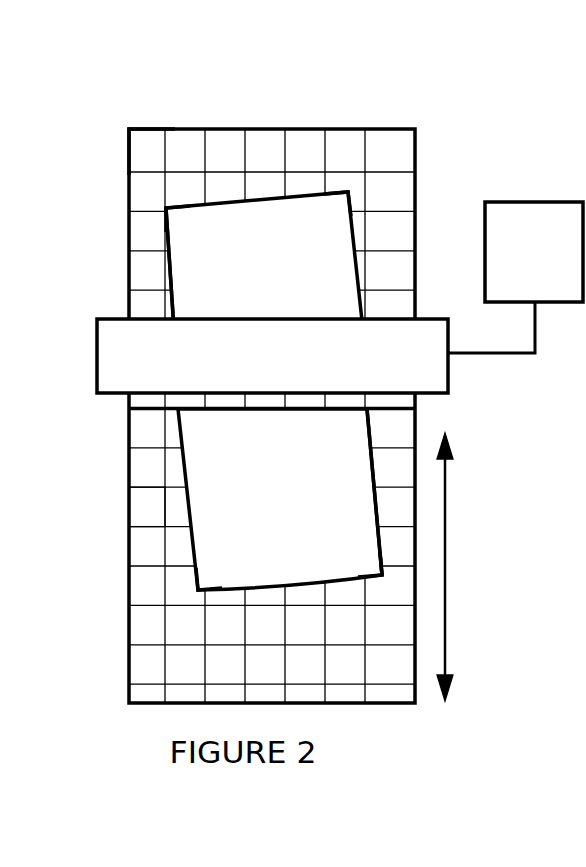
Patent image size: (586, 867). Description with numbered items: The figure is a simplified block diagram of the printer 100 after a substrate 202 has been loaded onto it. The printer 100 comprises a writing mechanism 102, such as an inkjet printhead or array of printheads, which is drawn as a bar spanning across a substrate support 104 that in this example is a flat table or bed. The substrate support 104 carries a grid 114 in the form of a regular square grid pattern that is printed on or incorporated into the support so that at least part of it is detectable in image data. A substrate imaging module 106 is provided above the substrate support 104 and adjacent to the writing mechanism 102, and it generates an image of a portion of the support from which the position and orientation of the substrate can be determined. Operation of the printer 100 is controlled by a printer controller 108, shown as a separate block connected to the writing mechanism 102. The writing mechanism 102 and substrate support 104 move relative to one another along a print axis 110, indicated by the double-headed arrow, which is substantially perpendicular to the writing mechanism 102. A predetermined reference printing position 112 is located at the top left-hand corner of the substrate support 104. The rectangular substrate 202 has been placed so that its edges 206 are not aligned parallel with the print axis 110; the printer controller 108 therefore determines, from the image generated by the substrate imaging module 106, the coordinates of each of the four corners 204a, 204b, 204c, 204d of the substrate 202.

The printer 100 is at (310, 424).
The writing mechanism 102 is at (292, 366).
The substrate support 104 is at (296, 446).
The substrate imaging module 106 is at (231, 547).
The printer controller 108 is at (516, 263).
The print axis 110 is at (447, 654).
The predetermined reference printing position 112 is at (129, 129).
The grid 114 is at (150, 527).
The substrate 202 is at (303, 204).
The first corner of the substrate 204a is at (166, 207).
The second corner of the substrate 204b is at (348, 192).
The third corner of the substrate 204c is at (382, 575).
The fourth corner of the substrate 204d is at (198, 590).
The edges of the substrate 206 is at (168, 277).